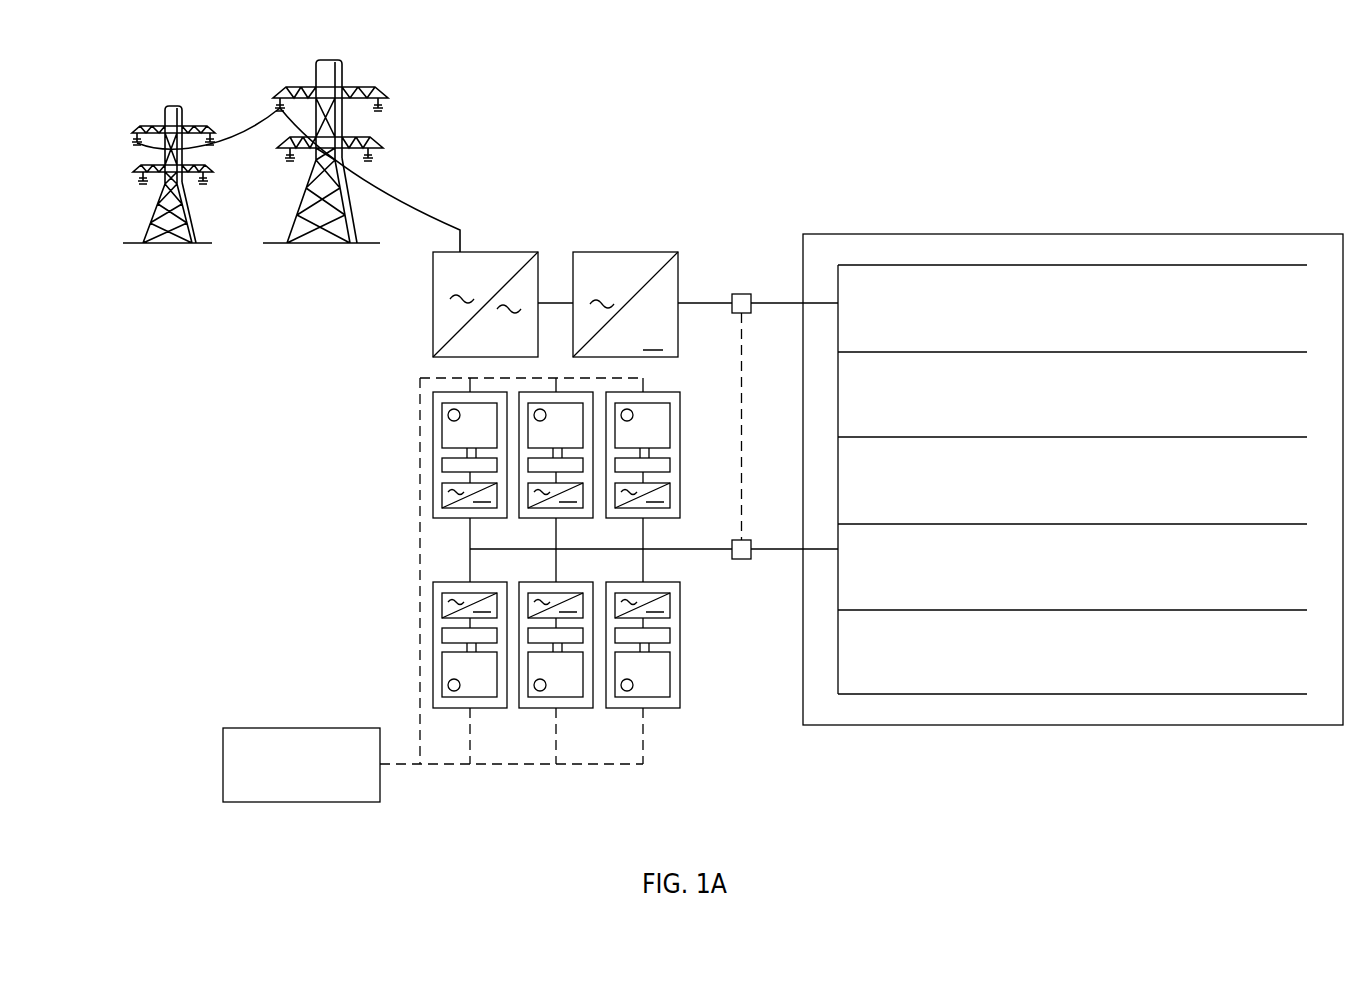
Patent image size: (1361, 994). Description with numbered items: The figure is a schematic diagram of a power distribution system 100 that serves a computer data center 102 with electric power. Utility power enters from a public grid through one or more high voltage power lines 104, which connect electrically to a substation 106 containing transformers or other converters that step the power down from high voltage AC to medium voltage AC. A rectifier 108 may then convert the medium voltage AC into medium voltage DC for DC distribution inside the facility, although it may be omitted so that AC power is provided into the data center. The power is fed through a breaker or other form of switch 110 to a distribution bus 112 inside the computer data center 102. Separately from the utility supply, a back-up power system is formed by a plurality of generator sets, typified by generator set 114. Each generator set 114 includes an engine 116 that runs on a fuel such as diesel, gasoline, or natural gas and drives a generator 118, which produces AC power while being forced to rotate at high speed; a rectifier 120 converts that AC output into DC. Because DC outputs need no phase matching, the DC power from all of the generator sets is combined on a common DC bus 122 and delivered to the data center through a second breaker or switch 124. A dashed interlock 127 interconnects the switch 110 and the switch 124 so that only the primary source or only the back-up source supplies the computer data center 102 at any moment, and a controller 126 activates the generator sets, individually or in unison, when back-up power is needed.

The power distribution system 100 is at (745, 100).
The computer data center 102 is at (1073, 464).
The high voltage power lines 104 is at (421, 216).
The substation 106 is at (511, 252).
The rectifier 108 is at (627, 252).
The switch 110 is at (741, 293).
The distribution bus 112 is at (1001, 352).
The generator set 114 is at (476, 565).
The engine 116 is at (458, 437).
The generator 118 is at (442, 463).
The rectifier 120 is at (442, 496).
The common DC bus 122 is at (463, 549).
The switch 124 is at (741, 560).
The controller 126 is at (285, 728).
The interlock 127 is at (742, 400).